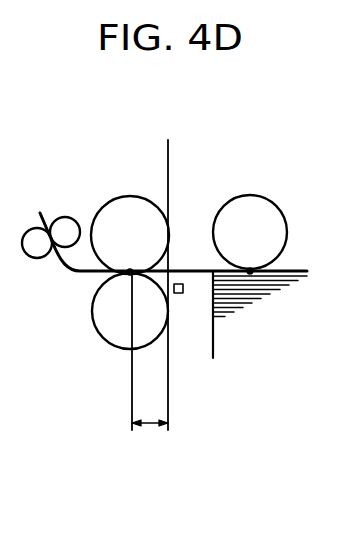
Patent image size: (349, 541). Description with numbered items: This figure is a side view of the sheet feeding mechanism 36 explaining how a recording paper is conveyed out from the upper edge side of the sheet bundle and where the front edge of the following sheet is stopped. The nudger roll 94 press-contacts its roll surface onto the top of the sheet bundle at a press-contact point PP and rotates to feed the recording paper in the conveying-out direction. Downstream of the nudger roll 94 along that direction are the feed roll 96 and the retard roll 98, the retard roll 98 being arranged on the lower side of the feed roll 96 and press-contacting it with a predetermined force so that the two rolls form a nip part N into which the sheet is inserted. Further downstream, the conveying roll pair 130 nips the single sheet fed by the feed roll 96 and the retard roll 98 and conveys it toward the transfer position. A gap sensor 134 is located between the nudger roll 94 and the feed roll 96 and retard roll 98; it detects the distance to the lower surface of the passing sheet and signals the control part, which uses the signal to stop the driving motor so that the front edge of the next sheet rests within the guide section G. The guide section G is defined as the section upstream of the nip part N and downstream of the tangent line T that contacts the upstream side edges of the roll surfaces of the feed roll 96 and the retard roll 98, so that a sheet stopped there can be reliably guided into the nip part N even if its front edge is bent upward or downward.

The sheet feeding mechanism 36 is at (218, 163).
The nudger roll 94 is at (287, 179).
The feed roll 96 is at (120, 195).
The retard roll 98 is at (113, 345).
The conveying roll pair 130 is at (37, 258).
The gap sensor 134 is at (184, 290).
The tangent line T is at (166, 273).
The nip part N is at (115, 278).
The guide section G is at (150, 362).
The press-contact point PP is at (251, 273).